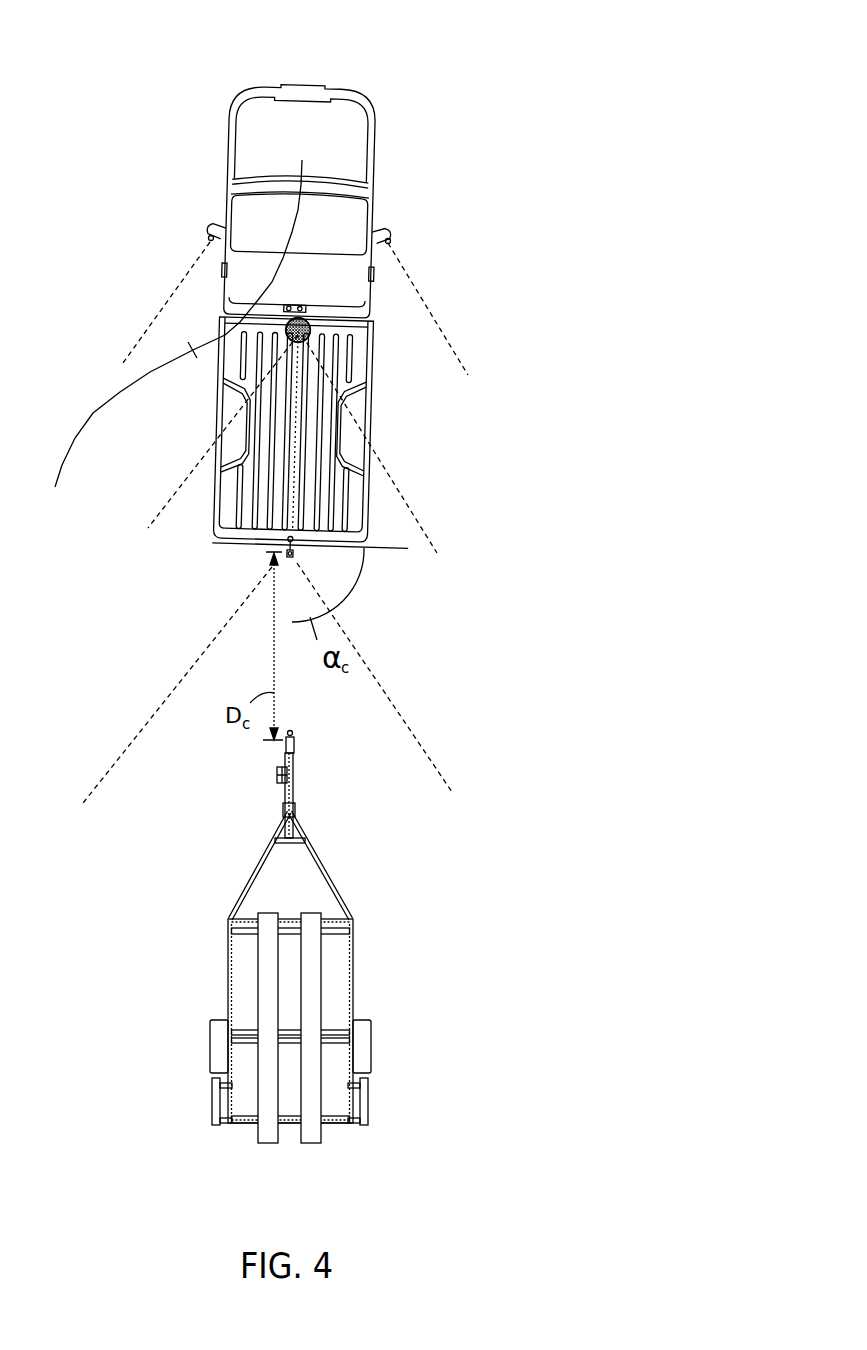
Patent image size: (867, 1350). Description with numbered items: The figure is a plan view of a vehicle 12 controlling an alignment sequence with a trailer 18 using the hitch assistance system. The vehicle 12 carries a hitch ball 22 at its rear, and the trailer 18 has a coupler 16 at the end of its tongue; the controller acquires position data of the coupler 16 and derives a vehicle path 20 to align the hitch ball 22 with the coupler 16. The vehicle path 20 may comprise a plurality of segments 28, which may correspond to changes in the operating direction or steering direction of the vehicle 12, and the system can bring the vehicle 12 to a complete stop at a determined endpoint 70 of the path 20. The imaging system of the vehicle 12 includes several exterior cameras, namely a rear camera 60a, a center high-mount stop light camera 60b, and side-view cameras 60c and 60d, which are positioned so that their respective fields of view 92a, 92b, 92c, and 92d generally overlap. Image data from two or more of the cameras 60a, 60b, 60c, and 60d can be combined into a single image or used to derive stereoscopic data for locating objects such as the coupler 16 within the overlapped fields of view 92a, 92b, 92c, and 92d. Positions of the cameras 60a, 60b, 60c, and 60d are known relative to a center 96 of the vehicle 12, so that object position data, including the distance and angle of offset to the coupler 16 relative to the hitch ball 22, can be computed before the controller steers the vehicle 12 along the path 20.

The vehicle 12 is at (382, 52).
The coupler 16 is at (293, 740).
The trailer 18 is at (238, 888).
The vehicle path 20 is at (306, 446).
The hitch ball 22 is at (280, 548).
The segments 28 is at (258, 298).
The rear camera 60a is at (297, 538).
The center high-mount stop light (CHMSL) camera 60b is at (298, 308).
The side-view camera 60c is at (390, 246).
The side-view camera 60d is at (211, 242).
The endpoint 70 is at (292, 536).
The field of view 92a is at (192, 668).
The field of view 92b is at (147, 528).
The field of view 92c is at (445, 335).
The field of view 92d is at (135, 343).
The center 96 is at (308, 321).